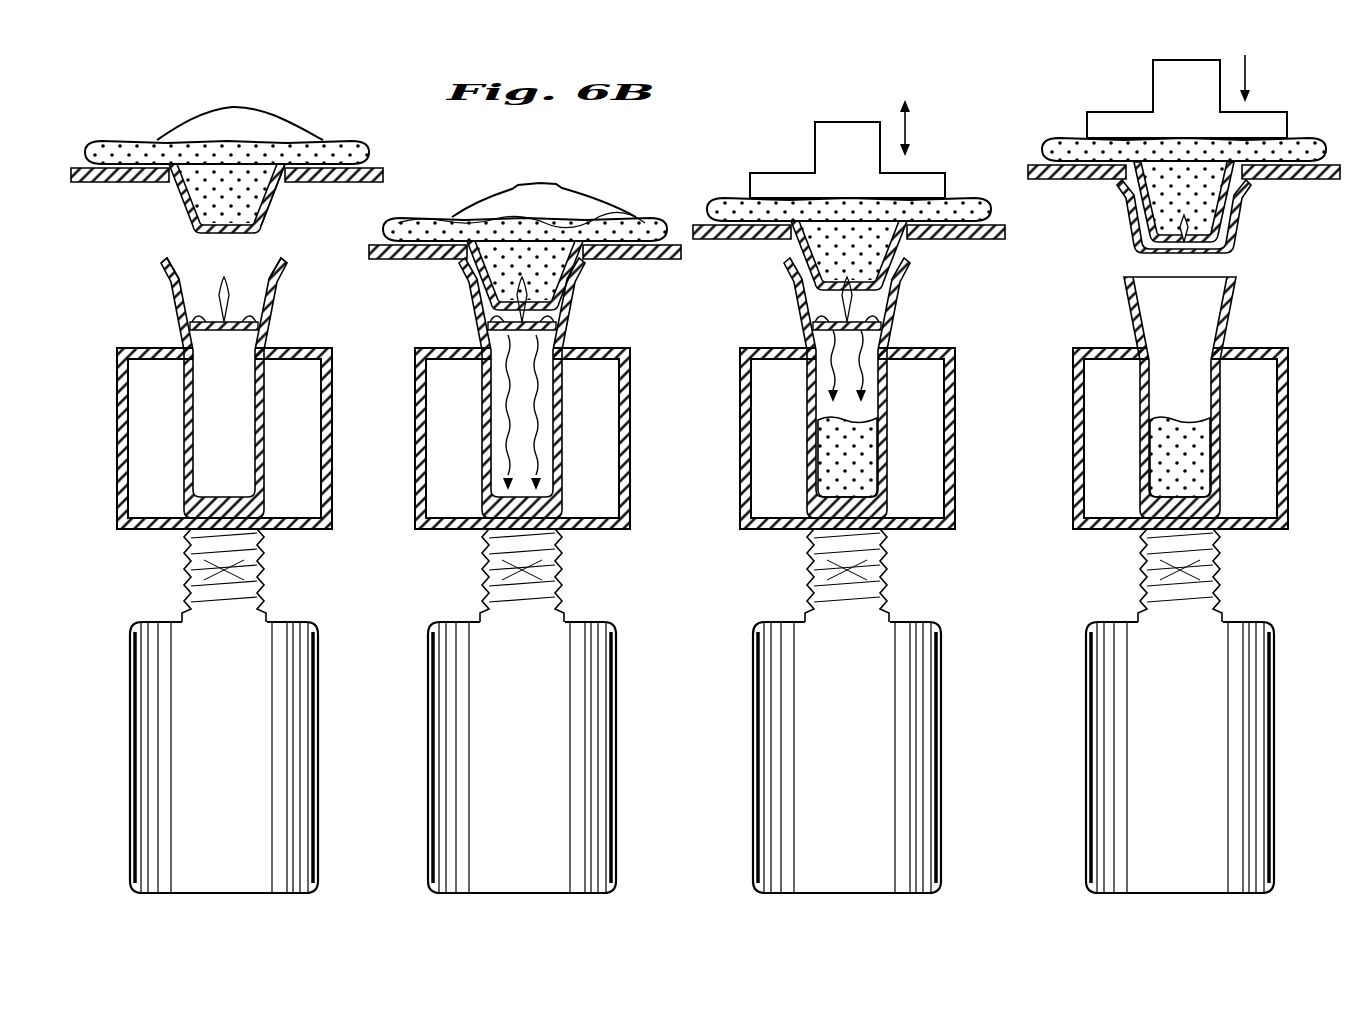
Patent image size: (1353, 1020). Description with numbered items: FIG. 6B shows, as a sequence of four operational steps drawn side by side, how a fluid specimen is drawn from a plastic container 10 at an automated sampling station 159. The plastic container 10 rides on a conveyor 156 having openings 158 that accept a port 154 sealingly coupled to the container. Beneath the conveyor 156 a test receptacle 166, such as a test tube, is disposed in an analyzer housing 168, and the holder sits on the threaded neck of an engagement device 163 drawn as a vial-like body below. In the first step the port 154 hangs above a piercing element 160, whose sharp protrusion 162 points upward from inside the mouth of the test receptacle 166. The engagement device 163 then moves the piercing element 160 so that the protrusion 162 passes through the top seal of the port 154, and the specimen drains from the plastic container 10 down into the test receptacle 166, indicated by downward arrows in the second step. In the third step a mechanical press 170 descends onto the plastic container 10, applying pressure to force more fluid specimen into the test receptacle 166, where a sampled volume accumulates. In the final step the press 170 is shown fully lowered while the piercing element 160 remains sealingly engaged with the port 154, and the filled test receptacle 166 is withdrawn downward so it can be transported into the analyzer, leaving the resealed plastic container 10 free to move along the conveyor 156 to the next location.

The plastic container 10 is at (250, 115).
The port 154 is at (190, 207).
The conveyor 156 is at (349, 178).
The opening 158 is at (273, 183).
The sampling station 159 is at (163, 560).
The piercing element 160 is at (163, 262).
The sharp protrusion 162 is at (223, 290).
The engagement device 163 is at (162, 710).
The test receptacle 166 is at (186, 402).
The analyzer housing 168 is at (146, 348).
The mechanical press 170 is at (845, 140).